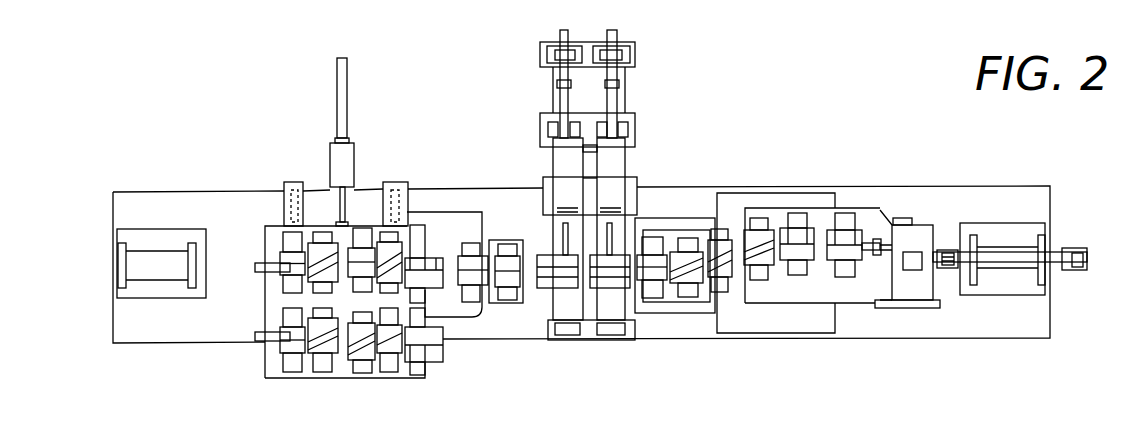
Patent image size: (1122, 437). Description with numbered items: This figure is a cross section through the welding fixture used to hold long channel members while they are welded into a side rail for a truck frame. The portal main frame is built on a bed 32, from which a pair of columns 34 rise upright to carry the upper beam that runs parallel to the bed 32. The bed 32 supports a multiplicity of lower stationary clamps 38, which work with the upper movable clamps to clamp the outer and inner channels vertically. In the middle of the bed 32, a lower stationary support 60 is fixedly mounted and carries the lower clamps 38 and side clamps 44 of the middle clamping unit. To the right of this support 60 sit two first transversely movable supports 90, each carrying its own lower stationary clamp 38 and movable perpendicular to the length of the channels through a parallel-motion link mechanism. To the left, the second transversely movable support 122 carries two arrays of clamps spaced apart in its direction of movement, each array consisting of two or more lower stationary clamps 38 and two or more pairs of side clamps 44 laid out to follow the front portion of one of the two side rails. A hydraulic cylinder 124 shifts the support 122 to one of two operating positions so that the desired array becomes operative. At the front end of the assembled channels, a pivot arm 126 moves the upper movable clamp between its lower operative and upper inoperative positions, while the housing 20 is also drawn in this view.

The housing 20 is at (453, 215).
The bed 32 is at (957, 197).
The columns 34 is at (153, 253).
The lower stationary clamps 38 is at (443, 272).
The side clamps 44 is at (413, 258).
The lower stationary support 60 is at (497, 297).
The first transversely movable supports 90 is at (558, 160).
The second transversely movable support 122 is at (273, 230).
The hydraulic cylinder 124 is at (345, 78).
The pivot arm 126 is at (255, 266).